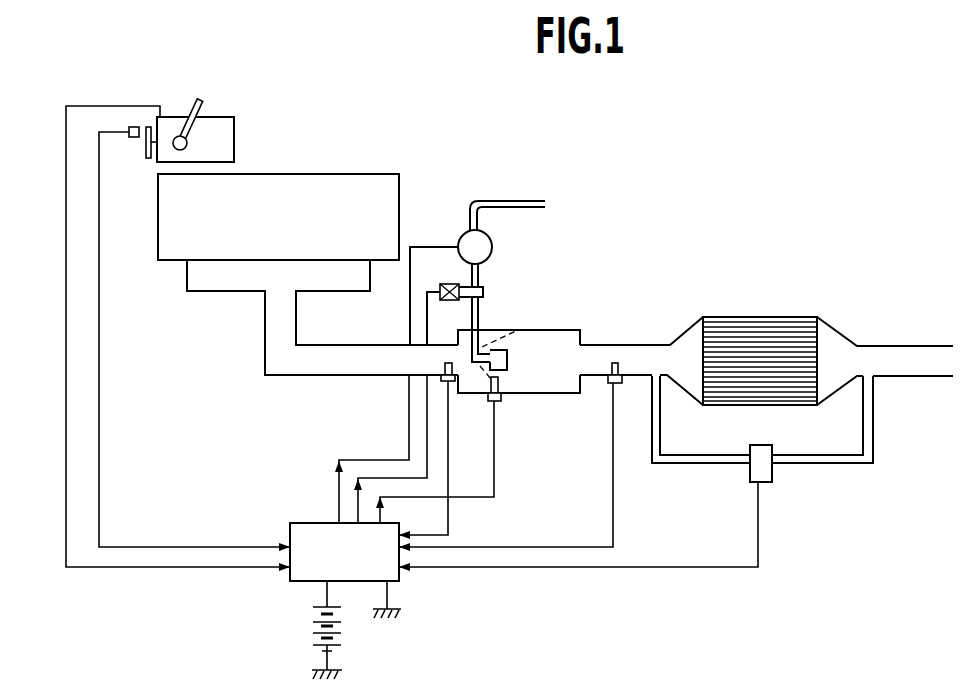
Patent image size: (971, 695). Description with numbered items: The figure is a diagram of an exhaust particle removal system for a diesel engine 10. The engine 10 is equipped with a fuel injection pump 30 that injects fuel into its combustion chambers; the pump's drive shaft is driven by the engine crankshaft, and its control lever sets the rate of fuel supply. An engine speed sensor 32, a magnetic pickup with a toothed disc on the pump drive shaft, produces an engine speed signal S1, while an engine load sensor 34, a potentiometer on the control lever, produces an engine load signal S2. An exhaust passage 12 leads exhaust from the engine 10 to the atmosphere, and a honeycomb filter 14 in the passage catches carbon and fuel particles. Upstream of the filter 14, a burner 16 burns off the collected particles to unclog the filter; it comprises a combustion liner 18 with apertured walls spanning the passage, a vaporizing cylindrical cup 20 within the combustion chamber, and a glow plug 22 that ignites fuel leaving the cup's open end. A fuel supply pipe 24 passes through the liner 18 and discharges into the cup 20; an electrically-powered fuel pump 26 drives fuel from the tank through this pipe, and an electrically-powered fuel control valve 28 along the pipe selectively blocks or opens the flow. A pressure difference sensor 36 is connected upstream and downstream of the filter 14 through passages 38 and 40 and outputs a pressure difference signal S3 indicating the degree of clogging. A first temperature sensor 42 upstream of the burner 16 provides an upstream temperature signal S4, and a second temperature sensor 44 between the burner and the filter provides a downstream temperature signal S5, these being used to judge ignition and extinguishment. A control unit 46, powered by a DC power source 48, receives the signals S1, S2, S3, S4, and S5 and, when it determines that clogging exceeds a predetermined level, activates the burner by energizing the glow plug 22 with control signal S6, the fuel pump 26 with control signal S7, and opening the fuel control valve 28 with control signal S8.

The diesel engine 10 is at (399, 176).
The exhaust passage 12 is at (283, 378).
The filter 14 is at (797, 317).
The burner 16 is at (571, 328).
The combustion liner 18 is at (505, 338).
The vaporizing cylindrical cup 20 is at (508, 358).
The glow plug 22 is at (500, 380).
The fuel supply pipe 24 is at (480, 318).
The fuel pump 26 is at (492, 243).
The fuel control valve 28 is at (488, 290).
The fuel injection pump 30 is at (237, 133).
The engine speed sensor 32 is at (140, 125).
The engine load sensor 34 is at (195, 132).
The pressure difference sensor 36 is at (772, 470).
The passage 38 is at (660, 428).
The passage 40 is at (873, 430).
The first temperature sensor 42 is at (454, 368).
The second temperature sensor 44 is at (620, 367).
The control unit 46 is at (304, 522).
The DC power source 48 is at (308, 623).
The engine speed signal S1 is at (100, 342).
The engine load signal S2 is at (63, 336).
The pressure difference signal S3 is at (760, 553).
The upstream temperature signal S4 is at (449, 486).
The downstream temperature signal S5 is at (614, 532).
The control signal S6 is at (496, 486).
The control signal S7 is at (409, 390).
The control signal S8 is at (427, 426).